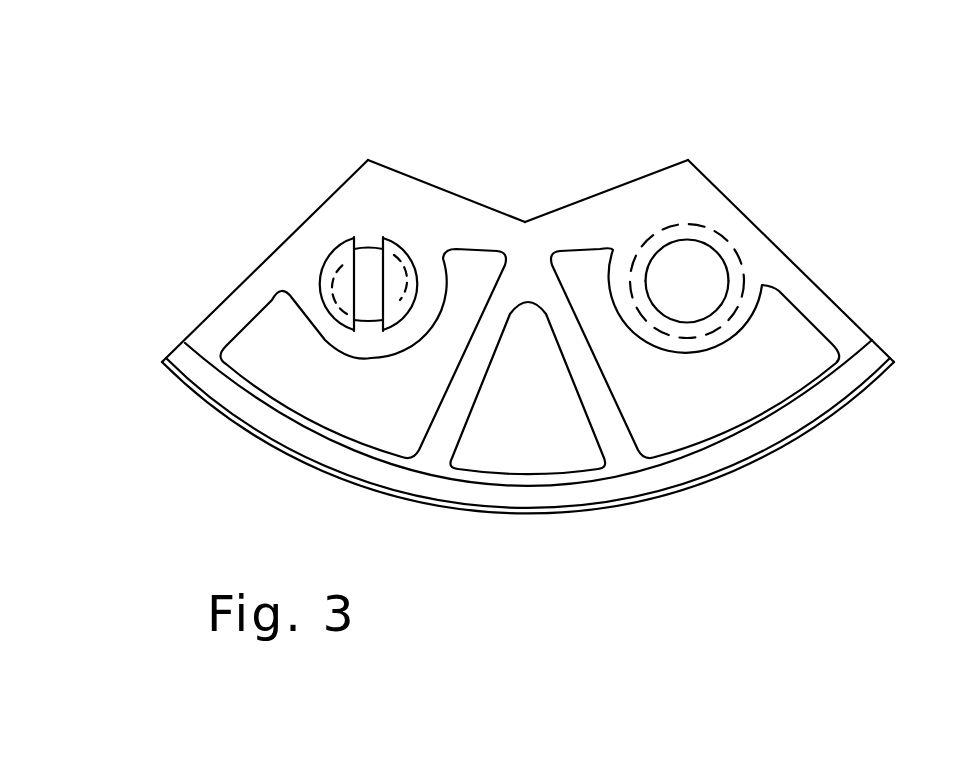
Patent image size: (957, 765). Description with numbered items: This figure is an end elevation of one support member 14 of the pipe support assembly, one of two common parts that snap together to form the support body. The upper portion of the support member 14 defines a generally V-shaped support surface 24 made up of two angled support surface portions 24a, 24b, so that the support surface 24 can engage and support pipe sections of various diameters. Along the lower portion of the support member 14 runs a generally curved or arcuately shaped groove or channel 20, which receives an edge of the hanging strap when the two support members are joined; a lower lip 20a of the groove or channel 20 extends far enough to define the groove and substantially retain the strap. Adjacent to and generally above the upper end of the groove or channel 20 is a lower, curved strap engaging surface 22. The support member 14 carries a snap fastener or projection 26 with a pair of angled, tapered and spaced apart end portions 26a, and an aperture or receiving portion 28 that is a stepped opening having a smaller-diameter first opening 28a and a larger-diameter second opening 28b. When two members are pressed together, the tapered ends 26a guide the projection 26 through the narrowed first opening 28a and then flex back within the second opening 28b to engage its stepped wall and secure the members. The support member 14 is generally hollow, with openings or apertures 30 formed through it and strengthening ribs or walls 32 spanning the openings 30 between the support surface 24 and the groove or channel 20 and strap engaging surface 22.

The support member 14 is at (345, 135).
The groove or channel 20 is at (552, 413).
The lower lip 20a is at (700, 478).
The strap engaging surface 22 is at (426, 482).
The support surface 24 is at (560, 151).
The angled support surface portion 24a is at (433, 185).
The angled support surface portion 24b is at (638, 177).
The snap fastener or projection 26 is at (344, 244).
The tapered end portions 26a is at (408, 258).
The aperture or receiving portion 28 is at (744, 255).
The first opening 28a is at (700, 323).
The second opening 28b is at (700, 227).
The openings or apertures 30 is at (356, 410).
The strengthening ribs or walls 32 is at (453, 403).